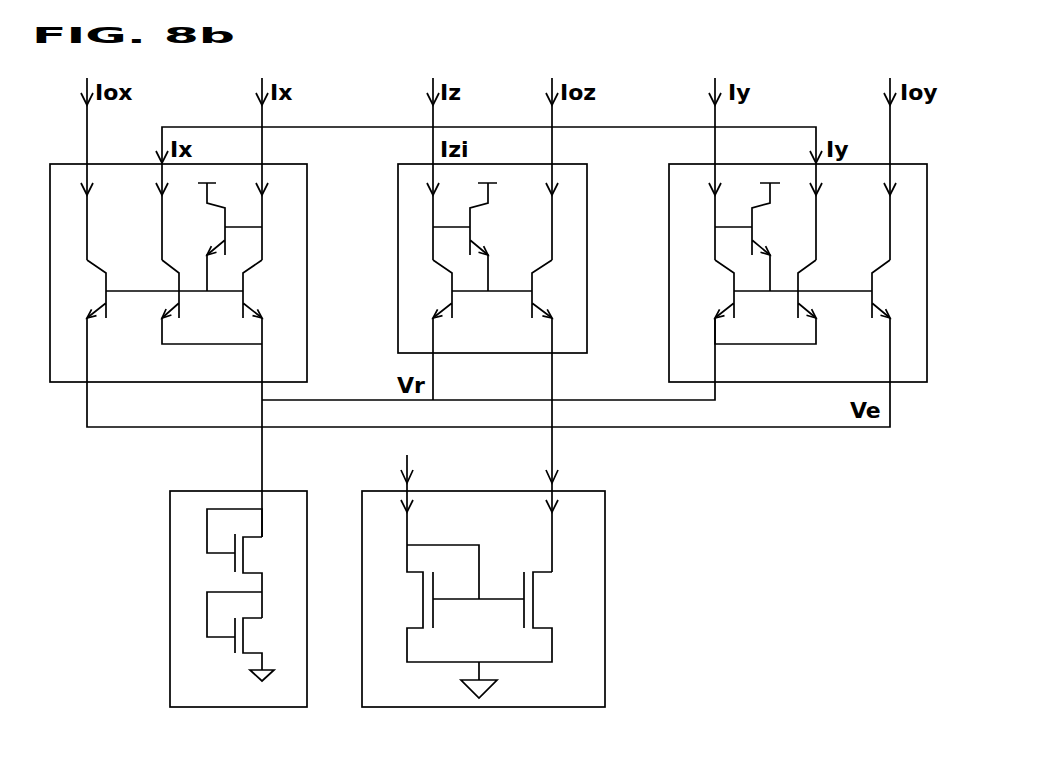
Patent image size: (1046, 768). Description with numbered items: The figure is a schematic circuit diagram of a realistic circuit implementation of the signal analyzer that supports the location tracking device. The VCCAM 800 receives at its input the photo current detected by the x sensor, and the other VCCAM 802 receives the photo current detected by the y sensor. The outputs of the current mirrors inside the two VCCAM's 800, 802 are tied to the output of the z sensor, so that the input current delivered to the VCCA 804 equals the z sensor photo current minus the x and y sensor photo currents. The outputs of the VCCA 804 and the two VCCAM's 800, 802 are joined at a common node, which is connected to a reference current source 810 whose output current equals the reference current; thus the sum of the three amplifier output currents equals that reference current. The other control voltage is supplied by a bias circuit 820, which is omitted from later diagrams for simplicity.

The VCCAM 800 is at (115, 372).
The VCCAM 802 is at (797, 372).
The VCCA 804 is at (579, 182).
The reference current source 810 is at (597, 553).
The bias circuit 820 is at (188, 617).